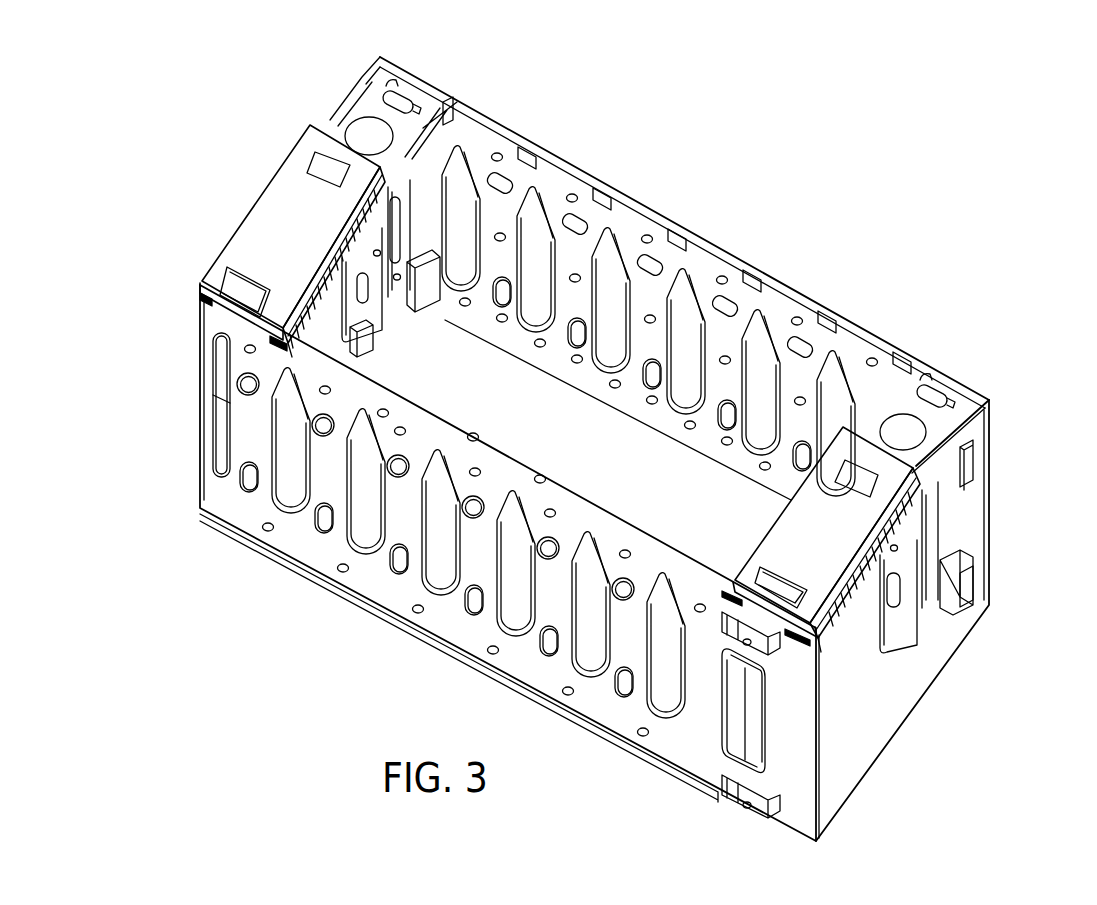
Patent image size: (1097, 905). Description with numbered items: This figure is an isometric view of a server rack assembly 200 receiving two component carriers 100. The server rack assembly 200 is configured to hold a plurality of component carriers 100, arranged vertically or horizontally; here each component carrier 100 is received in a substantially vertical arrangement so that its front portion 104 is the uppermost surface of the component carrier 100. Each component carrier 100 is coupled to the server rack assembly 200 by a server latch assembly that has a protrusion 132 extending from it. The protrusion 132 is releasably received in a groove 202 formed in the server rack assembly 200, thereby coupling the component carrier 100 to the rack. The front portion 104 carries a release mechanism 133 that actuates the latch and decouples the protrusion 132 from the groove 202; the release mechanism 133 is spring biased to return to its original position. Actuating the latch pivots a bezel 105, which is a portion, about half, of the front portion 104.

The component carrier 100 is at (990, 392).
The front portion 104 is at (823, 380).
The bezel 105 is at (865, 530).
The protrusion 132 is at (278, 345).
The release mechanism 133 is at (898, 434).
The server rack assembly 200 is at (888, 170).
The groove 202 is at (200, 283).